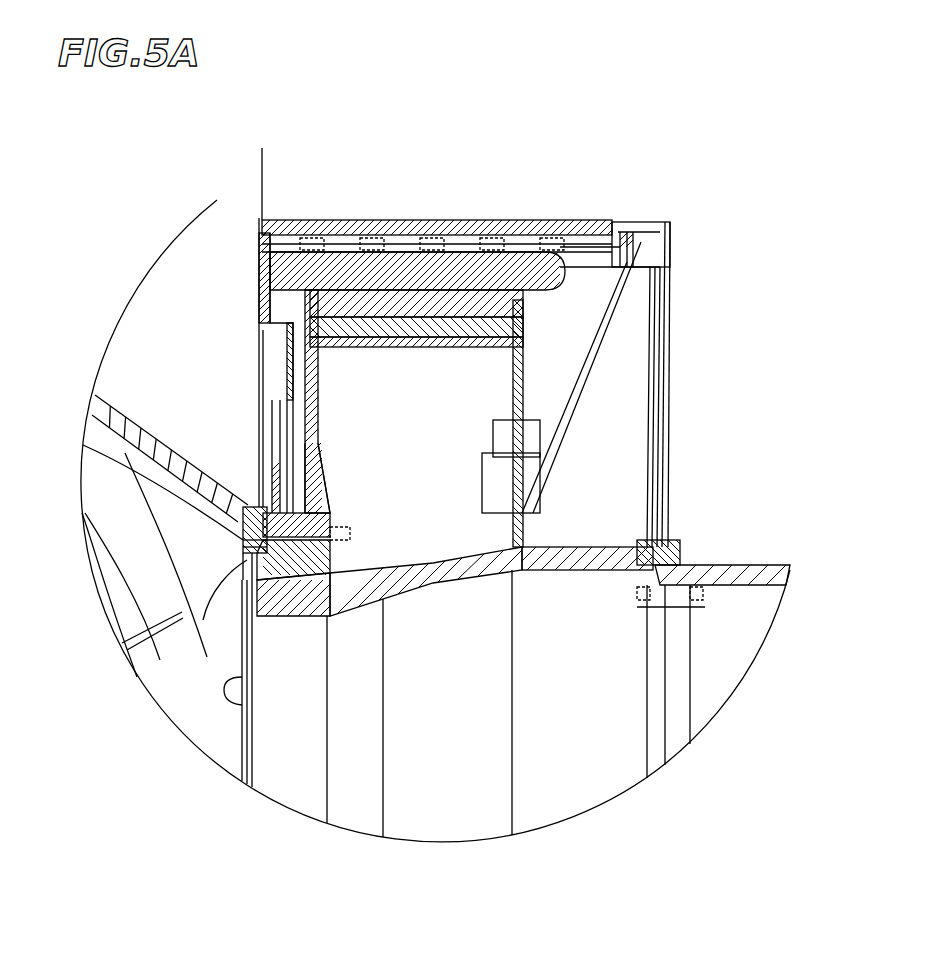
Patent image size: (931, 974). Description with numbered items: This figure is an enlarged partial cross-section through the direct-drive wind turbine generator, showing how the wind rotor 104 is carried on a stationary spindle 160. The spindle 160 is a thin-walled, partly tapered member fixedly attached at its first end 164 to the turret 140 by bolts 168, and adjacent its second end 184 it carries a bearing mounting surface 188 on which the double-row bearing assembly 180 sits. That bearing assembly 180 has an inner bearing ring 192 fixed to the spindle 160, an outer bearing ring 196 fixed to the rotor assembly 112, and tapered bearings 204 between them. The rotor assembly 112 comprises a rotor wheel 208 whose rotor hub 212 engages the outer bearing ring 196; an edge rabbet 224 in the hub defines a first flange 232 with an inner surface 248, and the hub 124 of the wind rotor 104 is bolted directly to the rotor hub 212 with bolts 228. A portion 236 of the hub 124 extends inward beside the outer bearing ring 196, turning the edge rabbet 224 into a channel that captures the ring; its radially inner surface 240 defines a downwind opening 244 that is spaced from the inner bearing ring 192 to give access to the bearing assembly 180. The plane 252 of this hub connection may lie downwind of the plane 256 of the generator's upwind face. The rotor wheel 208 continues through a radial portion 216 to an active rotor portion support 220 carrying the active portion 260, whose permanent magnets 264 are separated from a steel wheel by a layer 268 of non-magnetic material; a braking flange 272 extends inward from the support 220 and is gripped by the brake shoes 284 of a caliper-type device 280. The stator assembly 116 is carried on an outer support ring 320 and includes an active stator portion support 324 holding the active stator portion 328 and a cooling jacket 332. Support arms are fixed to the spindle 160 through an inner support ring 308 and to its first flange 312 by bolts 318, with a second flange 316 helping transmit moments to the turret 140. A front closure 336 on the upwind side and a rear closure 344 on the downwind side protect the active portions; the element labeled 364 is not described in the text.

The wind rotor 104 is at (228, 200).
The plane of the upwind face of generator 256 is at (264, 162).
The active stator portion 328 is at (257, 250).
The front closure 336 is at (258, 283).
The rotor assembly 112 is at (290, 365).
The plane of the connection 252 is at (285, 365).
The rotor hub 212 is at (245, 425).
The hub 124 is at (157, 410).
The edge rabbet 224 is at (245, 505).
The cooling jacket 332 is at (285, 238).
The permanent magnets 264 is at (460, 240).
The active stator portion support 324 is at (500, 227).
The layer of non-magnetic material 268 is at (437, 287).
The corner block 364 is at (612, 222).
The outer support ring 320 is at (671, 240).
The stator assembly 116 is at (580, 265).
The rear closure 344 is at (669, 338).
The first flange 312 is at (668, 540).
The active portion 260 is at (540, 318).
The braking flange 272 is at (598, 373).
The active rotor portion support 220 is at (430, 347).
The rotor wheel 208 is at (330, 395).
The brake shoes 284 is at (528, 407).
The radial portion 216 is at (318, 480).
The outer bearing ring 196 is at (323, 513).
The first flange 232 is at (337, 532).
The inner surface 248 is at (333, 550).
The tapered bearings 204 is at (333, 567).
The bolts 228 is at (242, 545).
The portion 236 is at (242, 549).
The radially inner surface 240 is at (240, 556).
The bearing assembly 180 is at (220, 567).
The inner bearing ring 192 is at (367, 587).
The caliper-type devices 280 is at (520, 550).
The spindle 160 is at (449, 597).
The inner support ring 308 is at (595, 547).
The bolts 318 is at (673, 542).
The turret 140 is at (760, 563).
The second flange 316 is at (660, 612).
The bolts 168 is at (710, 598).
The first end 164 is at (690, 660).
The second end 184 is at (243, 705).
The bearing mounting surface 188 is at (210, 647).
The downwind opening 244 is at (235, 745).